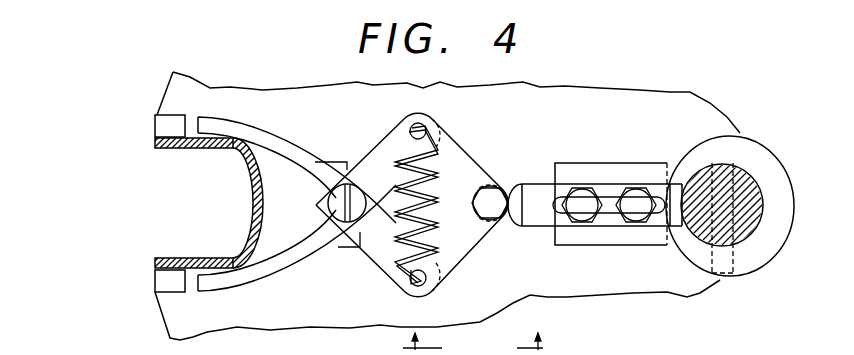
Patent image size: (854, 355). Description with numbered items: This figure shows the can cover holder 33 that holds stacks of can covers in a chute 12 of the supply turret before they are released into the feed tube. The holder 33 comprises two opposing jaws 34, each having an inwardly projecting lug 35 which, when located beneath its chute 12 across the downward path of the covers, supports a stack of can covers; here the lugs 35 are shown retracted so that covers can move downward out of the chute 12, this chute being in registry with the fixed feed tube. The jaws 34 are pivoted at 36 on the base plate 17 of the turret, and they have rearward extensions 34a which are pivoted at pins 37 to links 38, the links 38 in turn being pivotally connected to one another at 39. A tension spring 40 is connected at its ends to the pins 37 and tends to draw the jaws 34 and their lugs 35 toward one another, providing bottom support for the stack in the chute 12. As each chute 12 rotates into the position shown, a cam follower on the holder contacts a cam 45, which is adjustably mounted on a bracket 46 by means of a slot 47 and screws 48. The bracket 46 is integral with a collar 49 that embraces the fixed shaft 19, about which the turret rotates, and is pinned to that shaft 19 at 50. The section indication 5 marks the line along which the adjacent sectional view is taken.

The section line 5- 5 is at (473, 333).
The chute 12 is at (167, 151).
The base plate 17 is at (375, 104).
The shaft 19 is at (740, 180).
The can cover holder 33 is at (353, 206).
The jaws 34 is at (297, 204).
The rearward extensions 34a is at (360, 205).
The lug 35 is at (216, 152).
The pivot 36 is at (352, 226).
The pins 37 is at (426, 128).
The links 38 is at (456, 204).
The pivotal connection 39 is at (490, 203).
The tension spring 40 is at (404, 222).
The cam 45 is at (533, 227).
The bracket 46 is at (606, 163).
The slot 47 is at (610, 214).
The screws 48 is at (609, 205).
The collar 49 is at (779, 162).
The pin 50 is at (735, 262).